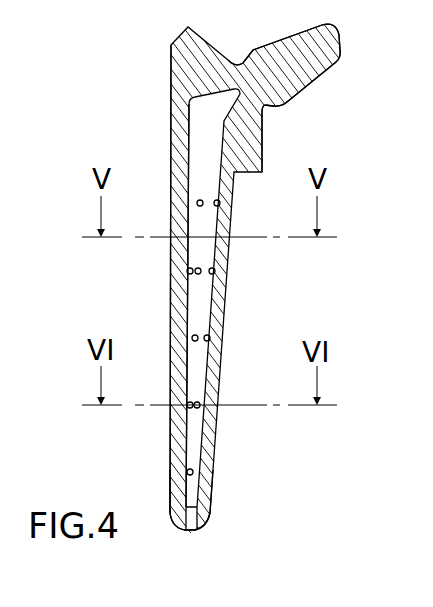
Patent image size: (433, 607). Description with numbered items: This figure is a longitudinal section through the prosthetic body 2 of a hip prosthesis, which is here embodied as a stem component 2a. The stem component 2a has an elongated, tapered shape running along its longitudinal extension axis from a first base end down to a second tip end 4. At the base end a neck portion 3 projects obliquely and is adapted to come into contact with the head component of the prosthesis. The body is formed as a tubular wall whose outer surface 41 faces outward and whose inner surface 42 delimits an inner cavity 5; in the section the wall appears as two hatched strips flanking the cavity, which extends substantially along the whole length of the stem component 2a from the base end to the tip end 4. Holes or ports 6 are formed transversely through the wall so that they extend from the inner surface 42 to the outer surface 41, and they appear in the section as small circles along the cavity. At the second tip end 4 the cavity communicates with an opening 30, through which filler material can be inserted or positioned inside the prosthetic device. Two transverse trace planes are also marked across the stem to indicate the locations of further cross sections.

The prosthetic body 2 is at (222, 322).
The stem component 2a is at (169, 335).
The neck portion 3 is at (318, 77).
The second tip end 4 is at (215, 523).
The inner cavity 5 is at (212, 107).
The holes or ports 6 is at (206, 191).
The opening 30 is at (187, 532).
The outer surface 41 is at (237, 248).
The inner surface 42 is at (194, 171).